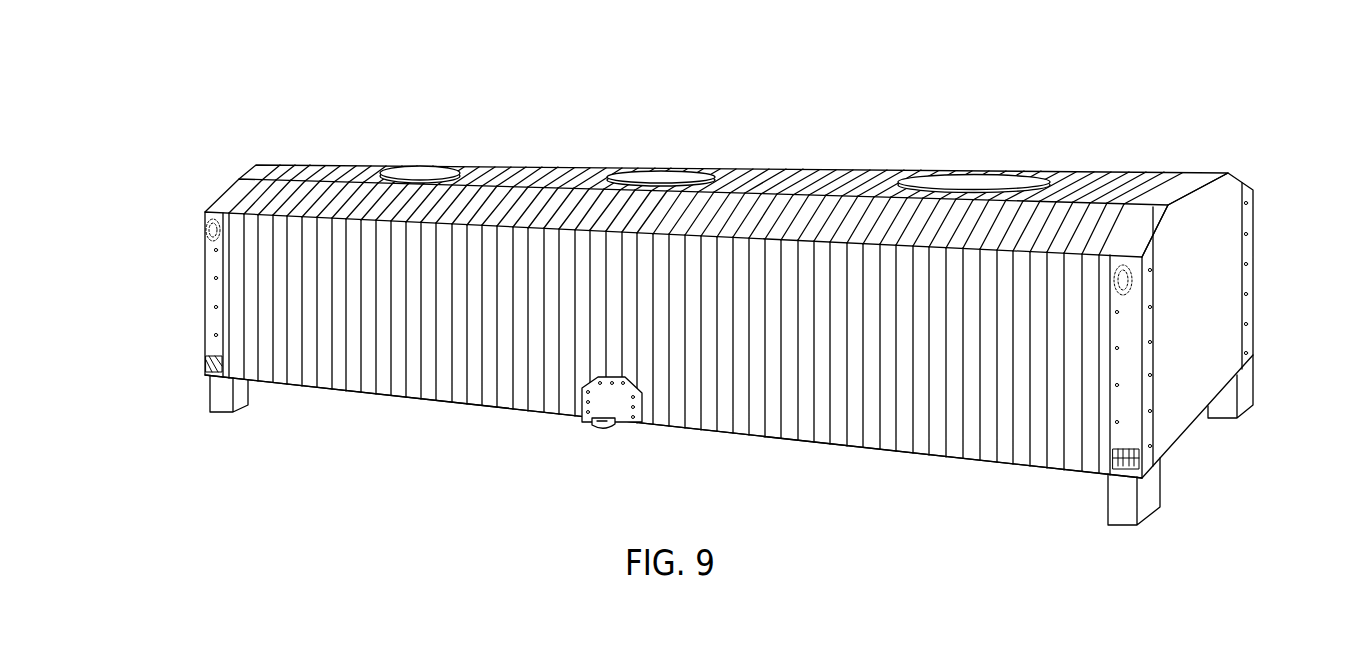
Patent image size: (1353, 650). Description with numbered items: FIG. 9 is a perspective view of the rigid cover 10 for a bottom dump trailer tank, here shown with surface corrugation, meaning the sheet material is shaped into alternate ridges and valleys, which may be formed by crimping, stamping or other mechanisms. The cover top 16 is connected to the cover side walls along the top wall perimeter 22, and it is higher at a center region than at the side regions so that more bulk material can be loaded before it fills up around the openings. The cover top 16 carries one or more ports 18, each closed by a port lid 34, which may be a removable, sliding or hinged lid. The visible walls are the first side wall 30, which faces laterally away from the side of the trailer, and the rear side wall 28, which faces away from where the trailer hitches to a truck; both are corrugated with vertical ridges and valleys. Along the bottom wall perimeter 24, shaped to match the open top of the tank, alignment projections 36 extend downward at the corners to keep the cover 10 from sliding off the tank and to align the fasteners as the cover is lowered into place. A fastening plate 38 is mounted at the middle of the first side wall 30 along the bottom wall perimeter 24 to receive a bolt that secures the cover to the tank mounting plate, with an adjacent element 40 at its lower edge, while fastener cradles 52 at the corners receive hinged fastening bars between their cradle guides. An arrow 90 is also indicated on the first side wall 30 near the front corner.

The rigid cover 10 is at (879, 74).
The cover top 16 is at (1200, 176).
The ports 18 is at (438, 172).
The top wall perimeter 22 is at (1053, 253).
The bottom wall perimeter 24 is at (880, 450).
The rear side wall 28 is at (1211, 330).
The first side wall 30 is at (790, 332).
The port lid 34 is at (400, 172).
The alignment projections 36 is at (218, 398).
The fastening plate 38 is at (625, 412).
The bracket 40 is at (593, 423).
The fastener cradle 52 is at (205, 357).
The direction arrow 90 is at (243, 282).